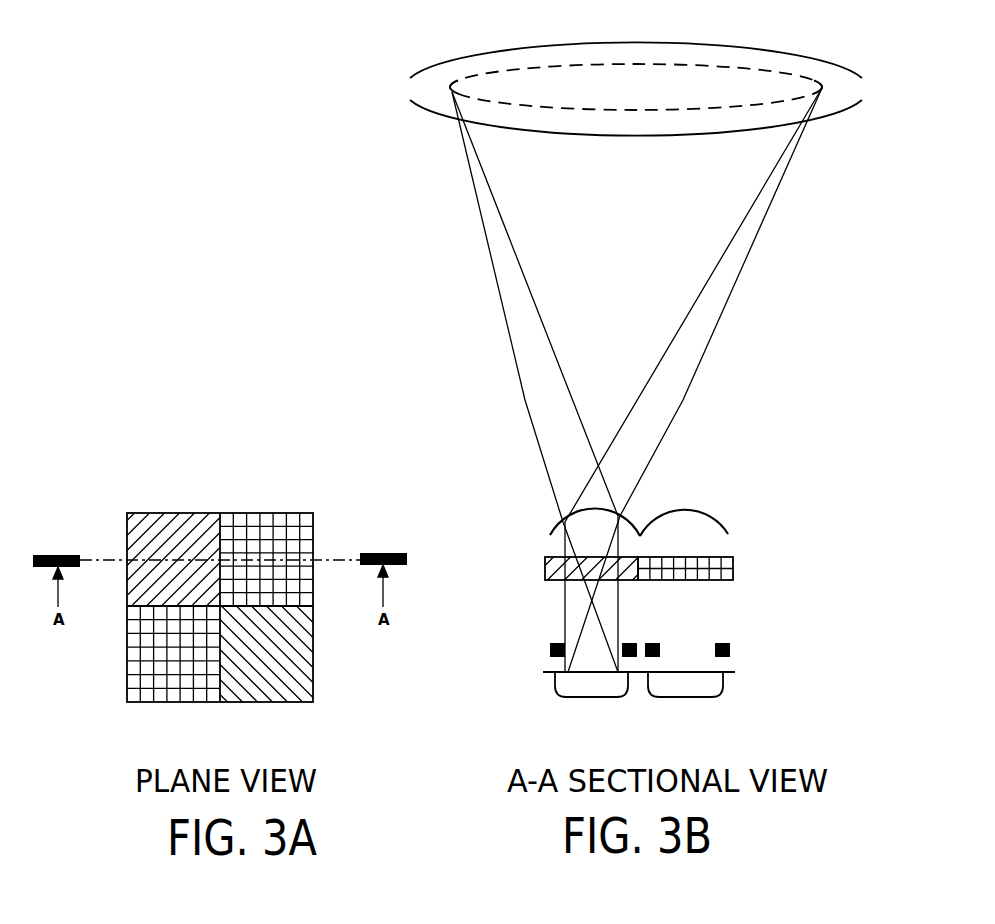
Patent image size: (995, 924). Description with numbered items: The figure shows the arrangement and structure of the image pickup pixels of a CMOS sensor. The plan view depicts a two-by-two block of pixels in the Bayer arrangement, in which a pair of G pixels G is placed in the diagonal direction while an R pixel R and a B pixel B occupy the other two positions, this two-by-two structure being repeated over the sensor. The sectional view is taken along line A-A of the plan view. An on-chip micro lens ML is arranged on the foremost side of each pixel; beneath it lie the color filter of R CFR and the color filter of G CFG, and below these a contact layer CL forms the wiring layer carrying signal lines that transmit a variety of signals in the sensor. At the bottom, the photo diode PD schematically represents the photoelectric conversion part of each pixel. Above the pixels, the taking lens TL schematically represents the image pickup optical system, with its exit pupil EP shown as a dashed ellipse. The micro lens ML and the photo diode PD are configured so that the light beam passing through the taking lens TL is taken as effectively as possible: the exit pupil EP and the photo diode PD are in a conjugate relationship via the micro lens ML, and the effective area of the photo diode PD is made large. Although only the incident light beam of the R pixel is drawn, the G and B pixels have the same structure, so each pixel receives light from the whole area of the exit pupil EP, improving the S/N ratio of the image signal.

In FIG. 3B, the taking lens TL is at (427, 90).
In FIG. 3B, the exit pupil EP is at (552, 89).
In FIG. 3B, the on-chip micro lens ML is at (685, 523).
In FIG. 3B, the color filter of R CFR is at (545, 568).
In FIG. 3B, the color filter of G CFG is at (733, 568).
In FIG. 3B, the contact layer CL is at (731, 648).
In FIG. 3B, the photo diode PD is at (687, 684).
In FIG. 3A, the R pixel R is at (173, 559).
In FIG. 3A, the G pixel G is at (220, 607).
In FIG. 3A, the B pixel B is at (266, 654).